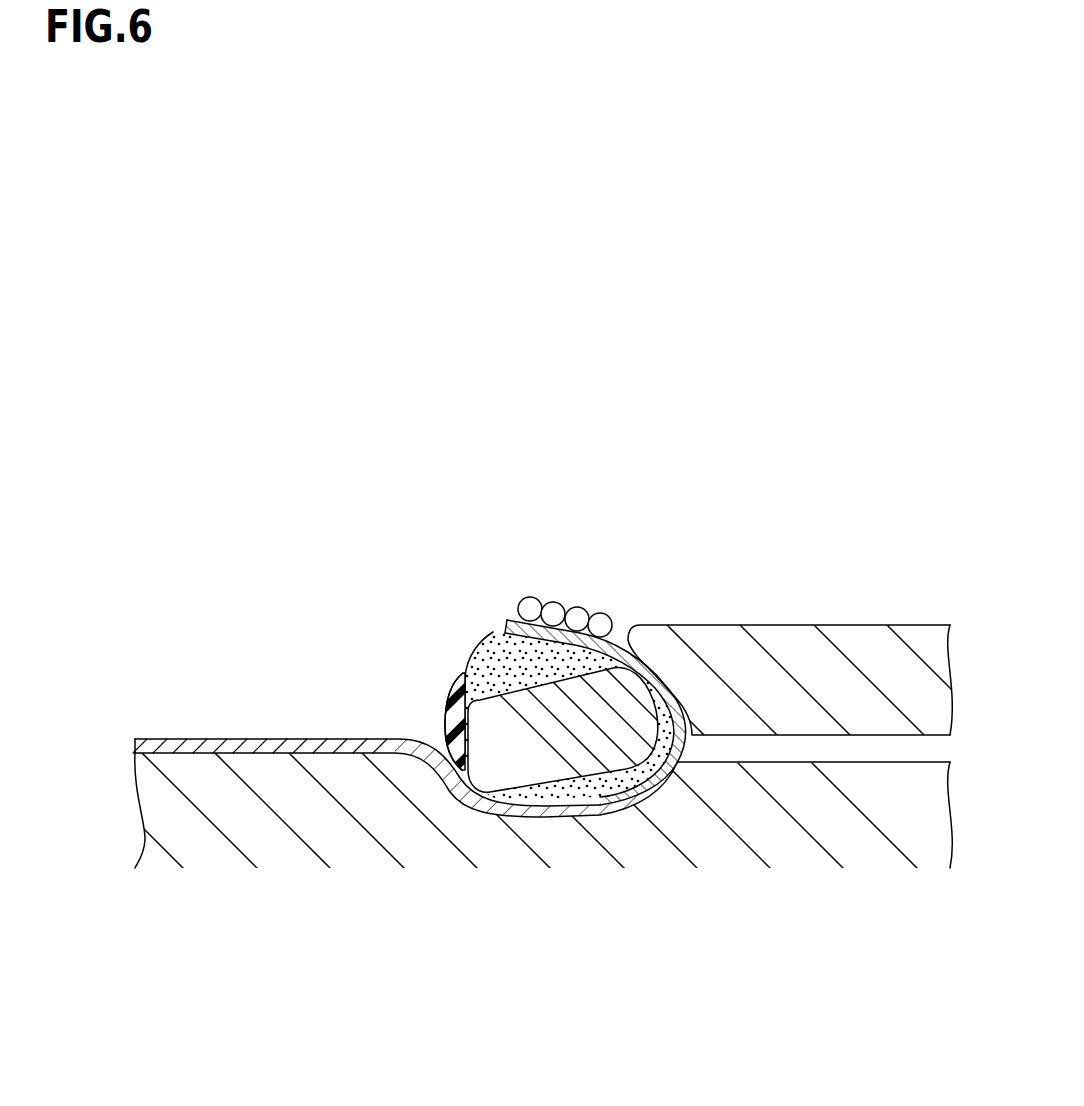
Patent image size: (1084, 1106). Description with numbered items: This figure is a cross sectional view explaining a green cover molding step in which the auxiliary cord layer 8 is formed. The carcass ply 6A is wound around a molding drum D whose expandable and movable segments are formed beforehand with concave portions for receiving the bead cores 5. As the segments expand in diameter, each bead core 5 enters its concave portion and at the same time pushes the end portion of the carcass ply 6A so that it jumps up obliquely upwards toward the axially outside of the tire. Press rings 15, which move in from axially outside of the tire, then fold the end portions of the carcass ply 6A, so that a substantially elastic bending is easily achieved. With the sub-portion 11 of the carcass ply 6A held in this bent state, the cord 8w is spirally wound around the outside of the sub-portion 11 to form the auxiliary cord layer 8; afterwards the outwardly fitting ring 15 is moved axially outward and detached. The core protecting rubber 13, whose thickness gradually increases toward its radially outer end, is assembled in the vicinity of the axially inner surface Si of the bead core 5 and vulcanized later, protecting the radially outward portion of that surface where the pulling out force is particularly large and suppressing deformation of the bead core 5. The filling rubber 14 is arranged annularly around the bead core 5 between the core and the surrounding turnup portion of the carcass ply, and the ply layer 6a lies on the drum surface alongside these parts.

The bead core 5 is at (551, 765).
The coating layer 6a is at (208, 739).
The carcass ply 6A is at (295, 739).
The auxiliary cord layer 8 is at (592, 501).
The cord 8w is at (530, 607).
The sub-portion 11 is at (505, 629).
The core protecting rubber 13 is at (447, 693).
The filling rubber 14 is at (493, 657).
The press ring 15 is at (797, 657).
The molding drum D is at (343, 919).
The axially inner surface Si is at (483, 788).